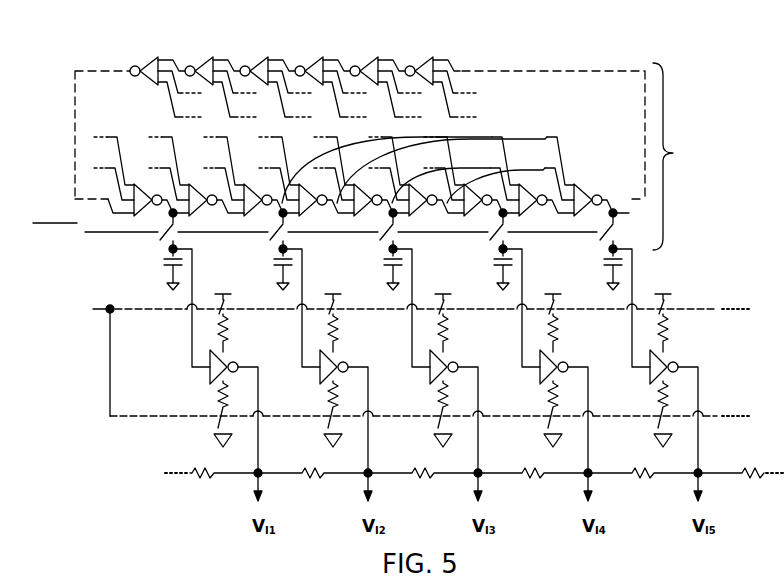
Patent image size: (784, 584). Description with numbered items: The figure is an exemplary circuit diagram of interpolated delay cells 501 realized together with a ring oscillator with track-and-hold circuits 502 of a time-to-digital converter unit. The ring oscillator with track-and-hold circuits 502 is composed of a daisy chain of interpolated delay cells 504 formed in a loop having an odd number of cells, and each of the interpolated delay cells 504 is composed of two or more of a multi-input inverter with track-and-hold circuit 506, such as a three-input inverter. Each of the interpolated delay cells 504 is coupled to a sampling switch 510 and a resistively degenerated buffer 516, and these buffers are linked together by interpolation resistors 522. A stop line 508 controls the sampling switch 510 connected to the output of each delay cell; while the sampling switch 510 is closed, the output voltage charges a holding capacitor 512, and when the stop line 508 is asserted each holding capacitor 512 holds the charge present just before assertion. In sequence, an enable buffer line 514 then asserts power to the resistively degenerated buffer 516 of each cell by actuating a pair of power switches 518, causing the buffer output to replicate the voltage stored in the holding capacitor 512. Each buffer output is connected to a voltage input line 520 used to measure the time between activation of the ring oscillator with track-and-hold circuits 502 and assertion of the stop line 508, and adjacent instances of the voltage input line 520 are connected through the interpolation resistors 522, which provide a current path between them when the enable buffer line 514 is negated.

The interpolated delay cells 501 is at (154, 40).
The ring oscillator with track-and-hold circuits 502 is at (674, 153).
The interpolated delay cells 504 is at (598, 133).
The multi-input inverter with track-and-hold circuit 506 is at (578, 186).
The stop line 508 is at (123, 233).
The sampling switch 510 is at (285, 227).
The holding capacitor 512 is at (163, 268).
The enable buffer line 514 is at (110, 353).
The resistively degenerated buffer 516 is at (213, 375).
The power switches 518 is at (328, 423).
The voltage input line 520 is at (478, 460).
The interpolation resistors 522 is at (210, 477).